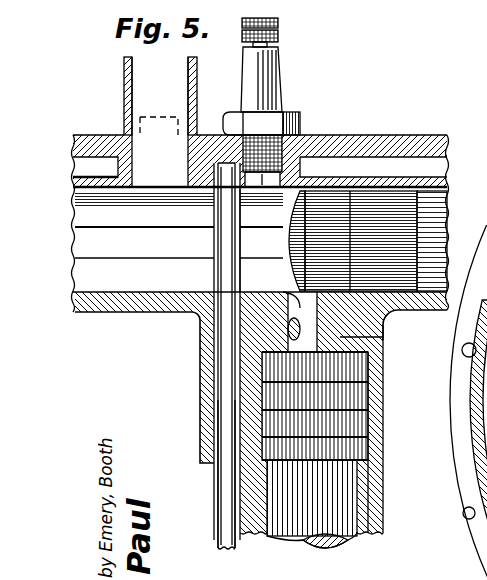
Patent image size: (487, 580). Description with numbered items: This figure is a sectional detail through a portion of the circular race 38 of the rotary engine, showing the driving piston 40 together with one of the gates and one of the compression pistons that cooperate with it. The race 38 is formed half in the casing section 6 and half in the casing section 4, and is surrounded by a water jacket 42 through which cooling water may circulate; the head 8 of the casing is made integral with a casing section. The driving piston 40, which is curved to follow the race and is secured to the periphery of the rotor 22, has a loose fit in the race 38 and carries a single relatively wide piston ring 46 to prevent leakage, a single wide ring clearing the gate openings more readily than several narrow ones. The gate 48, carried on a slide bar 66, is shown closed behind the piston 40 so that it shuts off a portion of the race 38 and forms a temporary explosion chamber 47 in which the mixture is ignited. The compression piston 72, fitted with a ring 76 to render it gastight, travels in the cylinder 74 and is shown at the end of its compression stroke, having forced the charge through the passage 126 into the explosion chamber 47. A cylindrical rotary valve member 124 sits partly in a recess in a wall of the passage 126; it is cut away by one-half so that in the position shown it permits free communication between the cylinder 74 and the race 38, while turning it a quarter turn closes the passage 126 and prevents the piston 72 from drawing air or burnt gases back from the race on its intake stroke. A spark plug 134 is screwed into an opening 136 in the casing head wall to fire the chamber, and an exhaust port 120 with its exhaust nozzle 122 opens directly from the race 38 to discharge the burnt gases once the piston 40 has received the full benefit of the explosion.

The casing section 4 is at (406, 300).
The casing section 6 is at (450, 146).
The head 8 is at (307, 522).
The rotor 22 is at (132, 245).
The circular race 38 is at (133, 311).
The driving piston 40 is at (405, 218).
The water jacket 42 is at (378, 163).
The piston ring 46 is at (330, 230).
The explosion chamber 47 is at (258, 285).
The gate 48 is at (214, 272).
The slide bar 66 is at (222, 490).
The compression piston 72 is at (350, 446).
The cylinder 74 is at (378, 490).
The piston ring 76 is at (352, 402).
The exhaust port 120 is at (142, 97).
The exhaust nozzle 122 is at (124, 66).
The rotary valve member 124 is at (378, 337).
The passage 126 is at (296, 305).
The spark plug 134 is at (268, 72).
The opening 136 is at (300, 135).